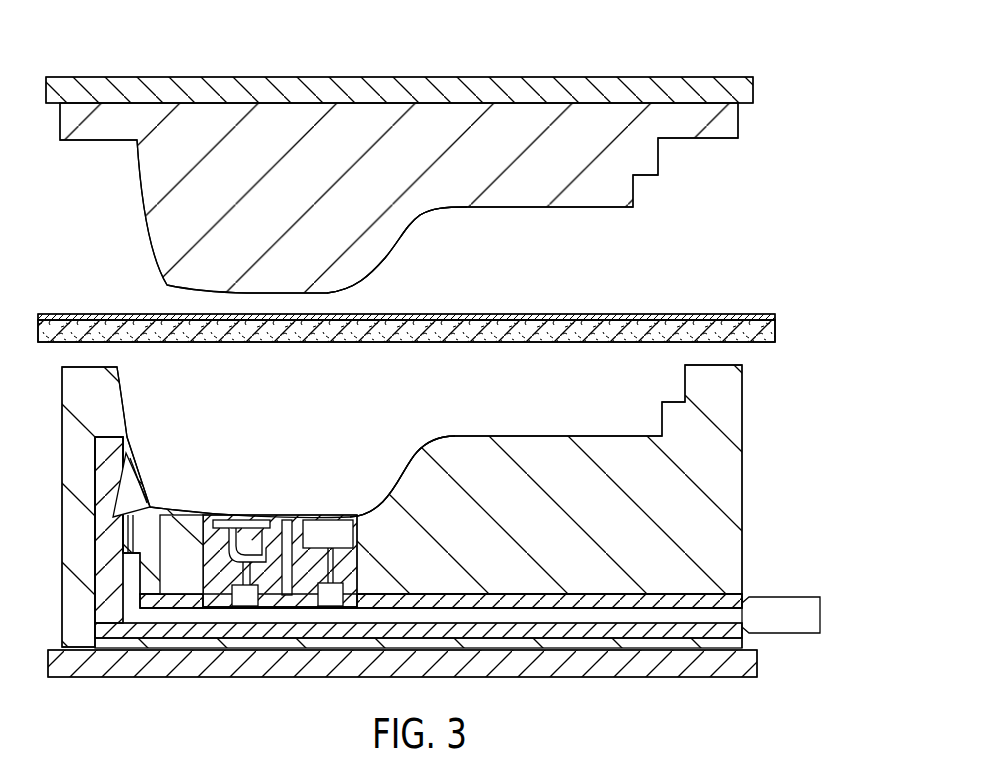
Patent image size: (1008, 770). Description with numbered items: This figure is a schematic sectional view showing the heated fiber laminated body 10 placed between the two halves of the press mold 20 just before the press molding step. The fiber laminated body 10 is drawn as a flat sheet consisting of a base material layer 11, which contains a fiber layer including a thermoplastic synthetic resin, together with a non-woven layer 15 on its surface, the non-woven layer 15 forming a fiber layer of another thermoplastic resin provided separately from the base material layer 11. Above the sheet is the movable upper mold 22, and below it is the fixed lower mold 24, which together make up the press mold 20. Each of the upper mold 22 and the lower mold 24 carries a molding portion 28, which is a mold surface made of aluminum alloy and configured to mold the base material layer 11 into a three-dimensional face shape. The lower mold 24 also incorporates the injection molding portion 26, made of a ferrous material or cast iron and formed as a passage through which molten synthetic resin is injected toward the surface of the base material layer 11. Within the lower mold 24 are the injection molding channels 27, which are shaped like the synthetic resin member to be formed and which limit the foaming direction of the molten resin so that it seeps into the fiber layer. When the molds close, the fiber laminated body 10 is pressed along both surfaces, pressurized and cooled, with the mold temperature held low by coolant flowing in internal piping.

The fiber laminated body 10 is at (462, 327).
The base material layer 11 is at (440, 339).
The non-woven layer 15 is at (778, 316).
The press mold 20 is at (399, 146).
The upper mold 22 is at (632, 152).
The lower mold 24 is at (434, 521).
The injection molding portion 26 is at (680, 600).
The injection molding channels 27 is at (118, 488).
The molding portion 28 is at (414, 221).